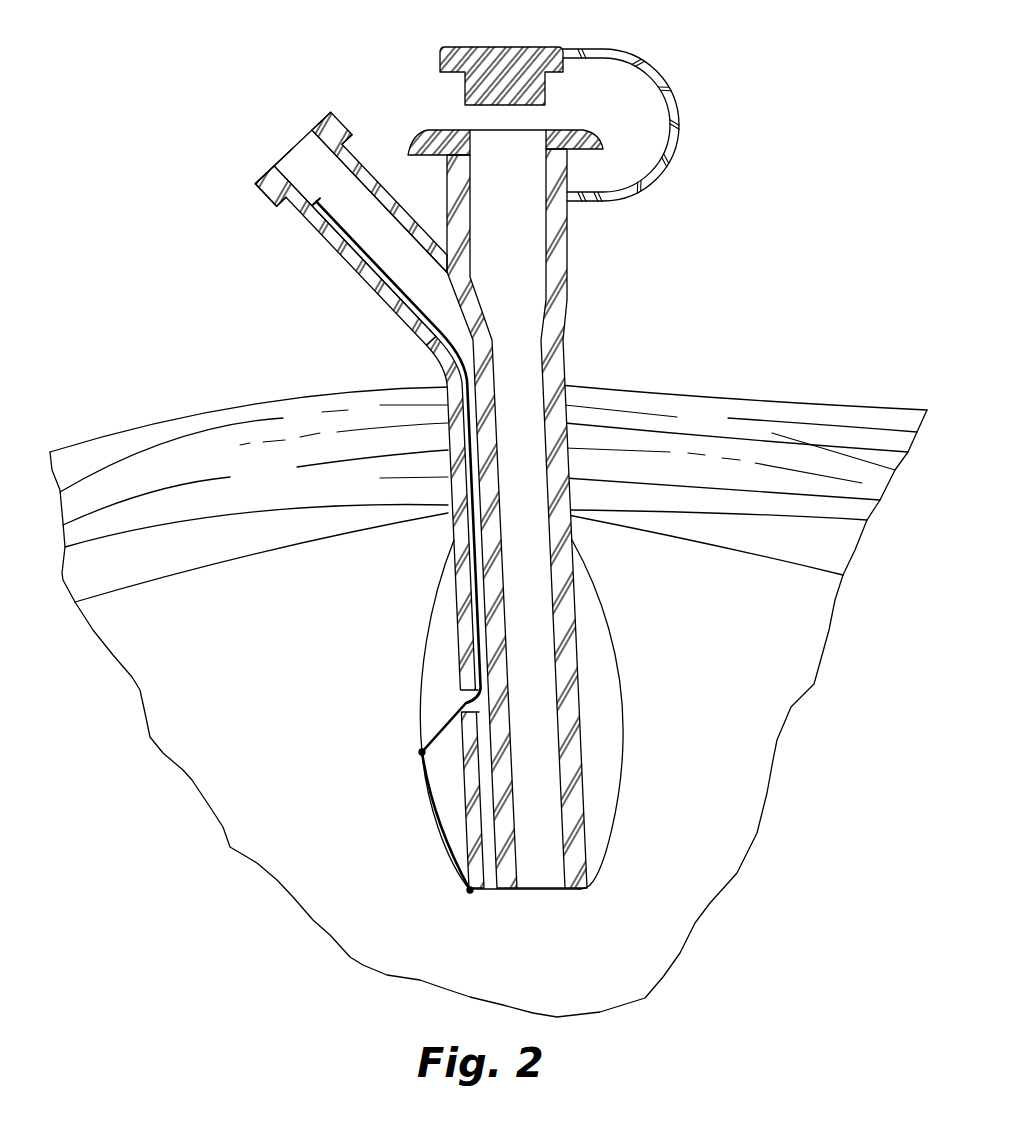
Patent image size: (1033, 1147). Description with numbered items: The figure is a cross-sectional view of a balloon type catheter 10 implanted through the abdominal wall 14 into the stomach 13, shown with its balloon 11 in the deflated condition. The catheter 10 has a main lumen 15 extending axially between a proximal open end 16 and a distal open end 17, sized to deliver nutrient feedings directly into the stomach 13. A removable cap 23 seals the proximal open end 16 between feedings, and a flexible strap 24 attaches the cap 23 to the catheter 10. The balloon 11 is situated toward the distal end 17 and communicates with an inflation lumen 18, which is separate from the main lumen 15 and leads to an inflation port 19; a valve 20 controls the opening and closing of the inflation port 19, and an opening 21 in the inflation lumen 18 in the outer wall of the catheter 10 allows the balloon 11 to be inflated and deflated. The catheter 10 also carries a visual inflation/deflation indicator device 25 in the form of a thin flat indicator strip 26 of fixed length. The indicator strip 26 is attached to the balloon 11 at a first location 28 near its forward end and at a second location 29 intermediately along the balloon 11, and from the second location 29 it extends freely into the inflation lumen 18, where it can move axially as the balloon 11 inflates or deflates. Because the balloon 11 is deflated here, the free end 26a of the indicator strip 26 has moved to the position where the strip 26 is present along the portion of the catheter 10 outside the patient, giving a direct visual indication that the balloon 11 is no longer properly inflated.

The catheter 10 is at (748, 266).
The balloon 11 is at (624, 693).
The stomach 13 is at (236, 556).
The abdominal wall 14 is at (165, 468).
The main lumen 15 is at (545, 352).
The proximal open end 16 is at (480, 130).
The distal open end 17 is at (529, 897).
The inflation lumen 18 is at (372, 207).
The inflation port 19 is at (288, 148).
The valve 20 is at (268, 181).
The opening 21 is at (461, 692).
The removable cap 23 is at (515, 92).
The flexible strap 24 is at (678, 107).
The visual inflation/deflation indicator device 25 is at (367, 272).
The indicator strip 26 is at (407, 330).
The free end of indicator strip 26a is at (303, 218).
The first location 28 is at (470, 891).
The second location 29 is at (422, 752).